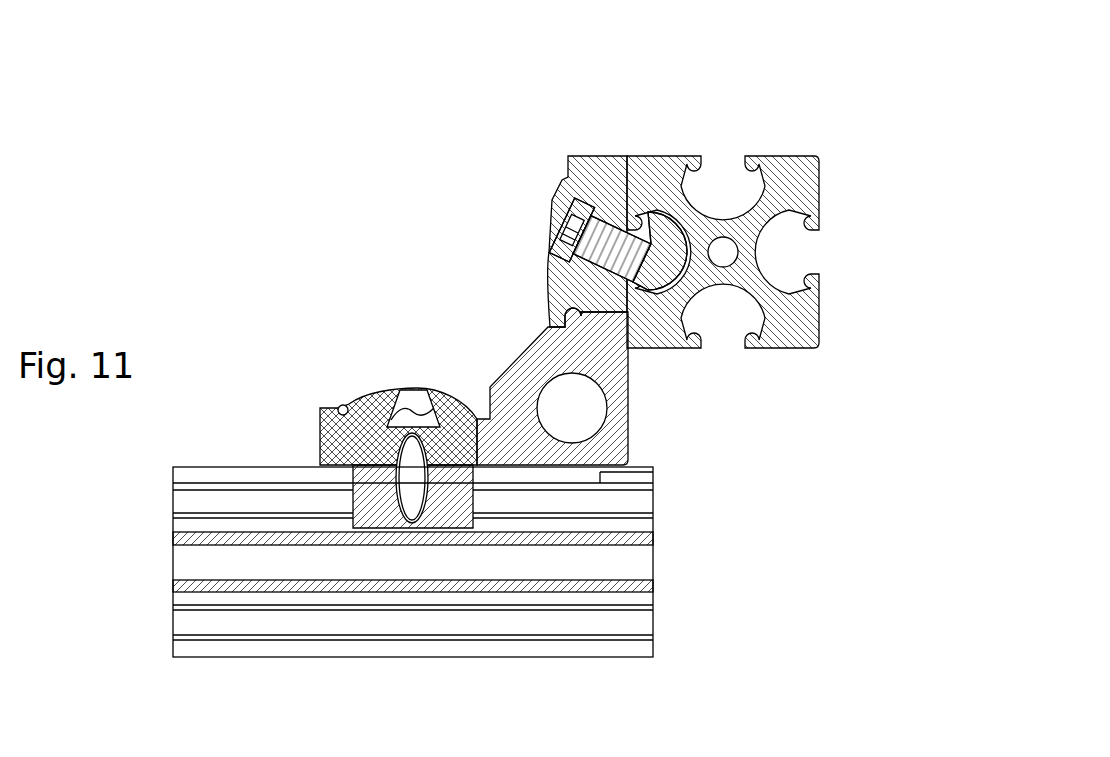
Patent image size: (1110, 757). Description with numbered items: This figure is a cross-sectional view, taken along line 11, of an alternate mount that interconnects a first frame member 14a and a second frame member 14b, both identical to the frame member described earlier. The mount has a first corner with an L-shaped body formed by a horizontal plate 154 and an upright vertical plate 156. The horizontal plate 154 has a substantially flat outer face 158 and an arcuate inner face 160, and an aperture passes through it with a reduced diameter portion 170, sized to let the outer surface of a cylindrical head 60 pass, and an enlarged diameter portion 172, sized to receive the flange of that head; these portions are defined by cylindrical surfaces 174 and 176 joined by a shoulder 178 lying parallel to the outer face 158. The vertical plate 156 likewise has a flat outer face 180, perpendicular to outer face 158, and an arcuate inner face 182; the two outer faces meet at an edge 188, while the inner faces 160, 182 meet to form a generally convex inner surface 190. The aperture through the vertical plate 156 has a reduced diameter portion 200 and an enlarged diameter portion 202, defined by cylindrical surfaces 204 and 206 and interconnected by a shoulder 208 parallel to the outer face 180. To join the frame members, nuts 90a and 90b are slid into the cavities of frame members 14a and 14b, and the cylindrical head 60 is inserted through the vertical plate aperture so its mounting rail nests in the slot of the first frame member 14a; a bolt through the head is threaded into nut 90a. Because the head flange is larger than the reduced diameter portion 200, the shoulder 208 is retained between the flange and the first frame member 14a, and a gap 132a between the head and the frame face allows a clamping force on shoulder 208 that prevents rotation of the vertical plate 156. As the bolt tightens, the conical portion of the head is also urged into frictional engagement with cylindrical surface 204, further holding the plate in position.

The section line 11 is at (275, 0).
The first frame member 14a is at (827, 151).
The second frame member 14b is at (157, 466).
The cylindrical head 60 is at (695, 188).
The nut 90a is at (690, 200).
The nut 90b is at (379, 540).
The gap 132a is at (660, 130).
The horizontal plate 154 is at (309, 405).
The vertical plate 156 is at (583, 144).
The outer face 158 is at (607, 490).
The inner face 160 is at (508, 370).
The reduced diameter portion 170 is at (350, 460).
The enlarged diameter portion 172 is at (343, 410).
The cylindrical surface 174 is at (465, 455).
The cylindrical surface 176 is at (478, 392).
The shoulder 178 is at (352, 398).
The outer face 180 is at (648, 196).
The inner face 182 is at (553, 178).
The edge 188 is at (641, 462).
The inner surface 190 is at (547, 325).
The reduced diameter portion 200 is at (613, 184).
The enlarged diameter portion 202 is at (560, 165).
The cylindrical surface 204 is at (630, 338).
The cylindrical surface 206 is at (565, 303).
The shoulder 208 is at (585, 318).